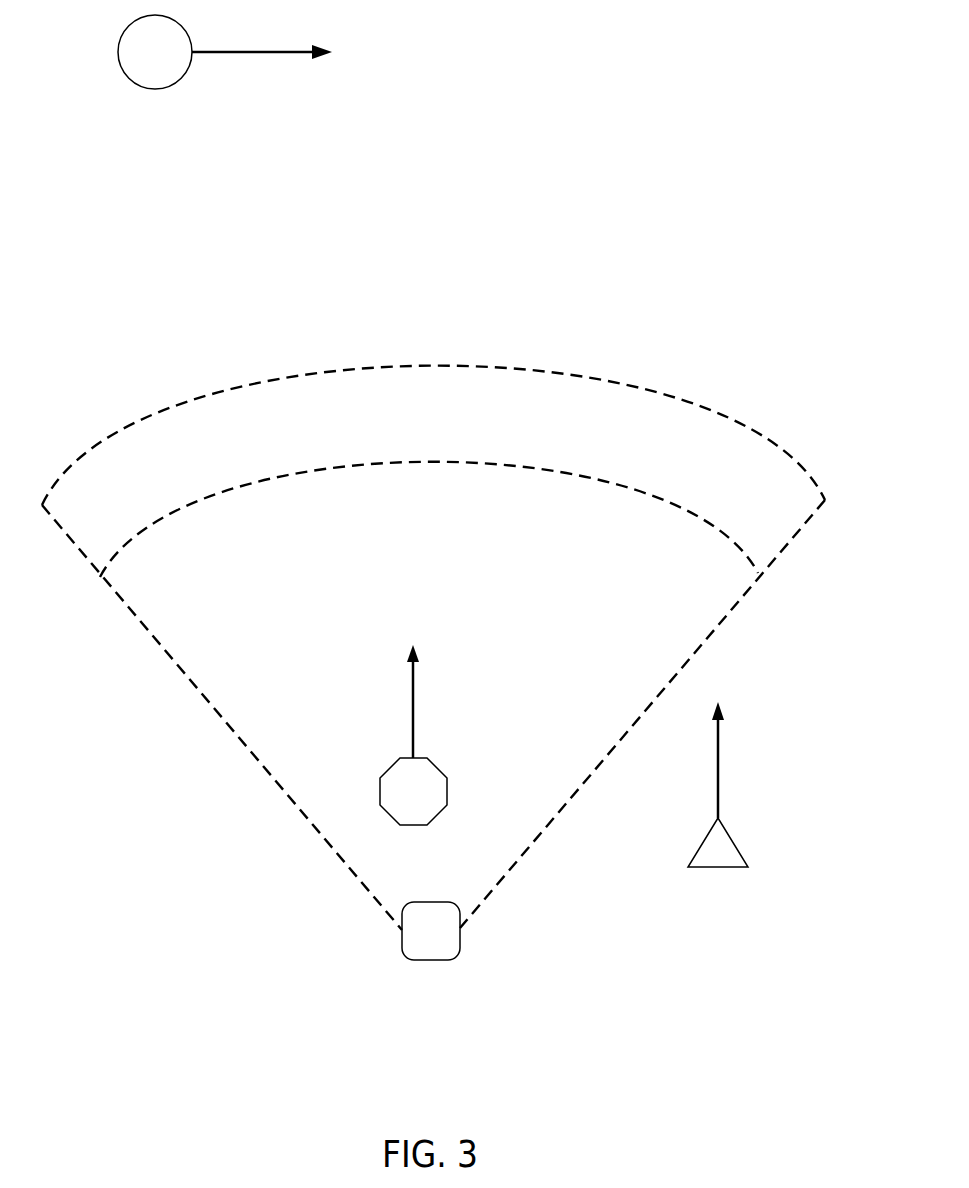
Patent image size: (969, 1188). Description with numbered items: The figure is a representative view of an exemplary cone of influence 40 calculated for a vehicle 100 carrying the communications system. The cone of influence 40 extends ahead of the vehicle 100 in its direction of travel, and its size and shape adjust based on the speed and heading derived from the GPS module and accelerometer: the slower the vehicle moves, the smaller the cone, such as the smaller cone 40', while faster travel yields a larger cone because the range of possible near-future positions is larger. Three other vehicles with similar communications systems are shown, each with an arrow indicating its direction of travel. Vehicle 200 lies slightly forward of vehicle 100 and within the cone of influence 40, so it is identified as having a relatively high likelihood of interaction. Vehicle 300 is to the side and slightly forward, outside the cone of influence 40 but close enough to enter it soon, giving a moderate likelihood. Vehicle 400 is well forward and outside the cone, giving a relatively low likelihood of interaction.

The vehicle 400 is at (225, 52).
The cone of influence 40 is at (433, 521).
The cone 40' is at (481, 500).
The vehicle 100 is at (431, 931).
The vehicle 200 is at (413, 735).
The vehicle 300 is at (718, 784).